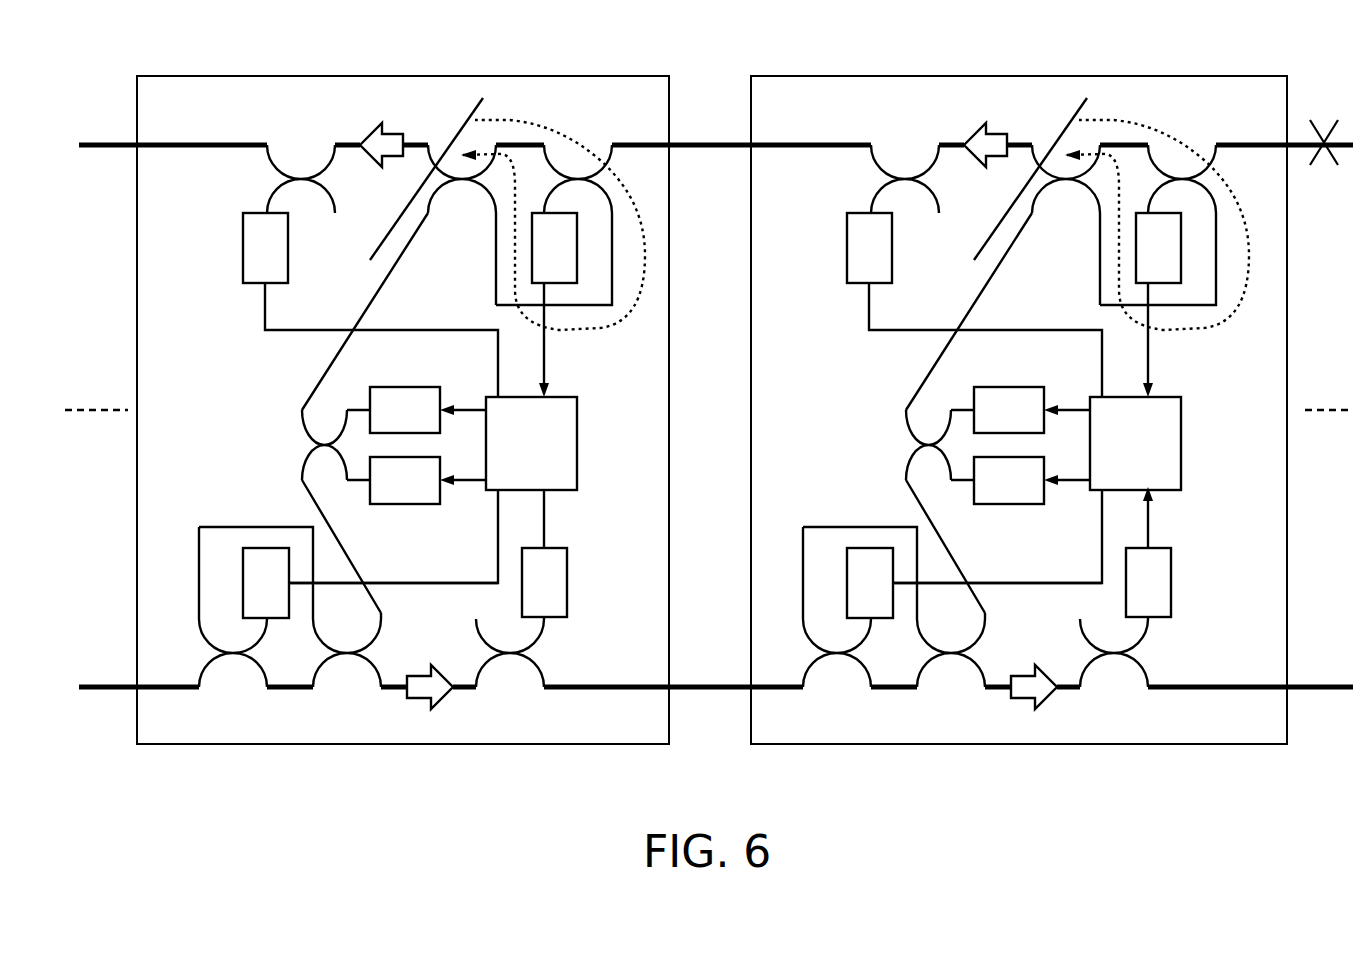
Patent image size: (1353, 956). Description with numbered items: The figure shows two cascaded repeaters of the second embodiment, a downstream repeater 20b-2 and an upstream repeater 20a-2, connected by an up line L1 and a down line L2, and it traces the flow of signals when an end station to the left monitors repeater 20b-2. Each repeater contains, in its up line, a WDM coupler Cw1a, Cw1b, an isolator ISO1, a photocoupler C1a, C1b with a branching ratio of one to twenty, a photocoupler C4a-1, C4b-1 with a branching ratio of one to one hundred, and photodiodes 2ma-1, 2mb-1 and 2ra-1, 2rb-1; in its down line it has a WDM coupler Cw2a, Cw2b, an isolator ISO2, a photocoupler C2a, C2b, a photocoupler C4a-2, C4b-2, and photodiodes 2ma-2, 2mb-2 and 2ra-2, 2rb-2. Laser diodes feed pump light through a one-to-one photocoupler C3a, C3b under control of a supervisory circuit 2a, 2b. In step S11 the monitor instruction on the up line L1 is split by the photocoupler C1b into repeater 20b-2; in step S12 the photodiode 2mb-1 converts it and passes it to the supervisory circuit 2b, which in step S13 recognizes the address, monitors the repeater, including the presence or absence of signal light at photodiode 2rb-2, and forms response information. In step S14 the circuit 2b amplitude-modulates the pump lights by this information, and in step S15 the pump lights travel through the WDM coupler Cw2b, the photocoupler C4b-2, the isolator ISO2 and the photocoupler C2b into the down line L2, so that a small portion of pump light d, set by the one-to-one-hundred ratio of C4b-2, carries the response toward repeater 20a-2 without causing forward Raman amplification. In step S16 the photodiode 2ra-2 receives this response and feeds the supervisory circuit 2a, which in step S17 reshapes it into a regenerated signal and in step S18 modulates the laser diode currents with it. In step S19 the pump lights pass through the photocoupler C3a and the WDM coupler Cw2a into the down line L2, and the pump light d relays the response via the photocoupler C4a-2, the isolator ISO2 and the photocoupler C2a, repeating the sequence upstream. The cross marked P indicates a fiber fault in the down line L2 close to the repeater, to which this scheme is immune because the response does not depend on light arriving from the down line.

The repeater 20a-2 is at (405, 76).
The repeater 20b-2 is at (1032, 76).
The up line L1 is at (124, 684).
The down line L2 is at (124, 148).
The photocoupler C2a is at (277, 193).
The photocoupler C2b is at (881, 193).
The WDM coupler Cw2a is at (432, 197).
The WDM coupler Cw2b is at (1036, 197).
The photocoupler C4a-2 is at (608, 148).
The photocoupler C4b-2 is at (1212, 148).
The photodiode 2ma-2 is at (243, 272).
The photodiode 2mb-2 is at (847, 272).
The photodiode 2ra-2 is at (533, 262).
The photodiode 2rb-2 is at (1137, 262).
The pump light d is at (612, 318).
The isolator ISO2 is at (370, 163).
The isolator ISO1 is at (413, 699).
The photocoupler C3a is at (305, 470).
The photocoupler C3b is at (909, 470).
The supervisory circuit 2a is at (487, 492).
The supervisory circuit 2b is at (1181, 397).
The photodiode 2ma-1 is at (568, 582).
The photodiode 2mb-1 is at (1174, 590).
The photodiode 2ra-1 is at (277, 548).
The photodiode 2rb-1 is at (881, 548).
The photocoupler C1a is at (546, 625).
The photocoupler C1b is at (1082, 666).
The photocoupler C4a-1 is at (205, 690).
The photocoupler C4b-1 is at (809, 690).
The WDM coupler Cw1a is at (318, 690).
The WDM coupler Cw1b is at (922, 690).
The fault point P is at (1324, 118).
The step S11 is at (1137, 717).
The step S12 is at (1151, 517).
The step S13 is at (1182, 445).
The step S14 is at (1066, 485).
The step S15 is at (1162, 98).
The step S16 is at (546, 363).
The step S17 is at (578, 445).
The step S18 is at (462, 485).
The step S19 is at (558, 98).